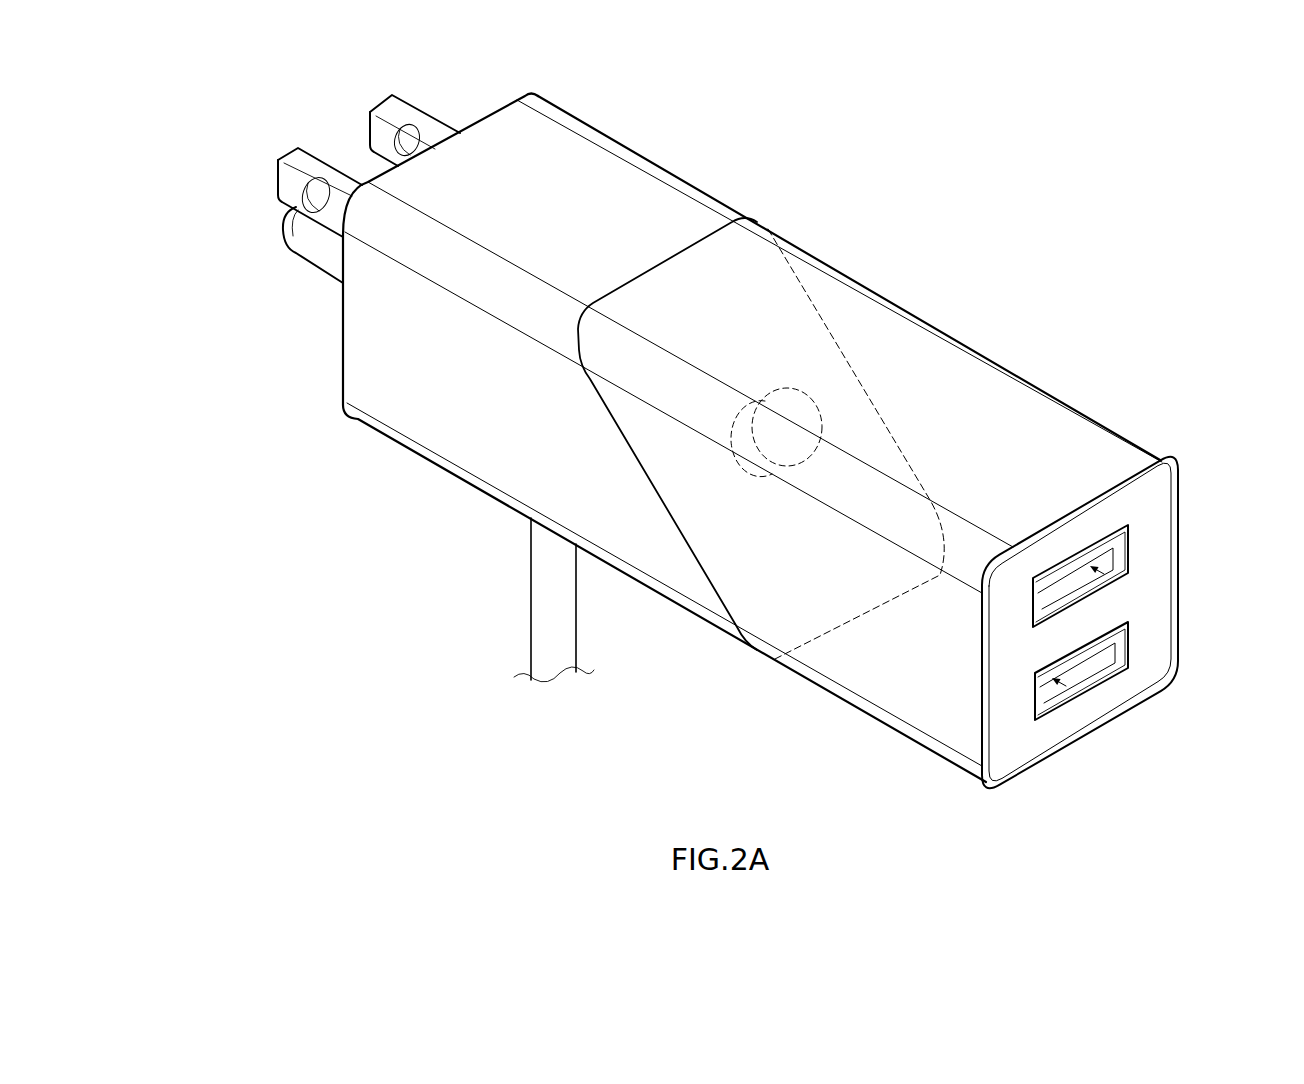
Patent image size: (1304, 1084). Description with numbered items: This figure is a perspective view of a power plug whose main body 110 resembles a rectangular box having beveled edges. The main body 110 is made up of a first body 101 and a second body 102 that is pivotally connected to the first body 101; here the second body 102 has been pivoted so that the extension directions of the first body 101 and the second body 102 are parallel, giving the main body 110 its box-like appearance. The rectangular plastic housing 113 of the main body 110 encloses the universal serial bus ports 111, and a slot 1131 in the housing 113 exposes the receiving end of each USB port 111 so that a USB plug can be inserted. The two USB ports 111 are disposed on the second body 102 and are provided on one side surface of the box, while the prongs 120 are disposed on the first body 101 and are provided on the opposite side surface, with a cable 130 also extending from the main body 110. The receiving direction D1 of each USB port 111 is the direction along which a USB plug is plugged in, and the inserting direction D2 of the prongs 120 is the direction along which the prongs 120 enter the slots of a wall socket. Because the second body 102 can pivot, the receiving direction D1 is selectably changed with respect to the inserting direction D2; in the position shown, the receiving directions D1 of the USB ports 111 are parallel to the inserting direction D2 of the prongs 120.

The main body 110 is at (945, 248).
The first body 101 is at (664, 209).
The second body 102 is at (915, 353).
The housing 113 is at (598, 124).
The universal serial bus port 111 is at (1116, 577).
The slot 1131 is at (1130, 547).
The prongs 120 is at (418, 117).
The cable 130 is at (531, 604).
The receiving direction D1 is at (1091, 595).
The inserting direction D2 is at (340, 123).